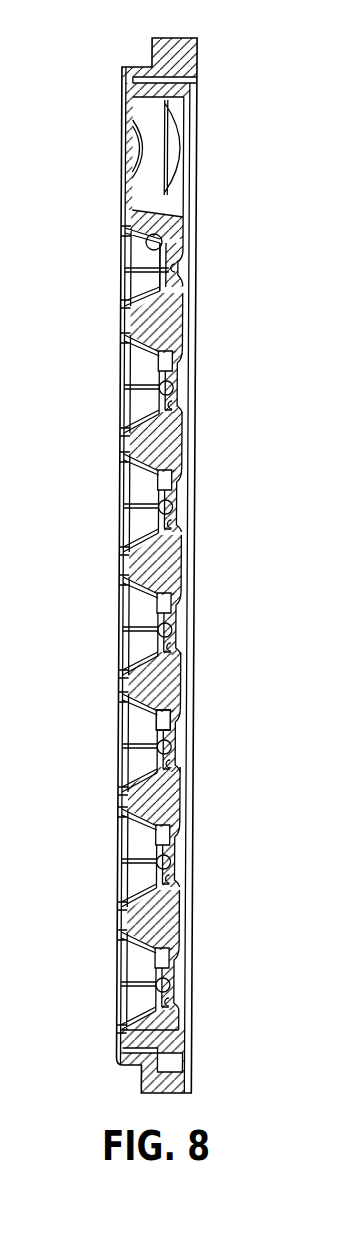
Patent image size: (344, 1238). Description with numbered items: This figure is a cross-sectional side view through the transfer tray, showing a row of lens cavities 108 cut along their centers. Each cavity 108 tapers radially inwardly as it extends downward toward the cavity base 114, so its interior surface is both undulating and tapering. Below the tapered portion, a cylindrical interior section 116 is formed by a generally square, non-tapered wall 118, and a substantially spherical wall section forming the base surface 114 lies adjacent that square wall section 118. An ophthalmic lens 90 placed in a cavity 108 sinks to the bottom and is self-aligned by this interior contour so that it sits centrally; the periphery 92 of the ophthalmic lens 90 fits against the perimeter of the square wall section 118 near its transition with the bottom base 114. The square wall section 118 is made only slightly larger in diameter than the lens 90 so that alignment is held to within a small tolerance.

The ophthalmic lens 90 is at (172, 397).
The periphery of the ophthalmic lens 92 is at (180, 764).
The cavity 108 is at (130, 402).
The cavity base 114 is at (178, 270).
The cylindrical interior section 116 is at (165, 226).
The square wall 118 is at (186, 725).